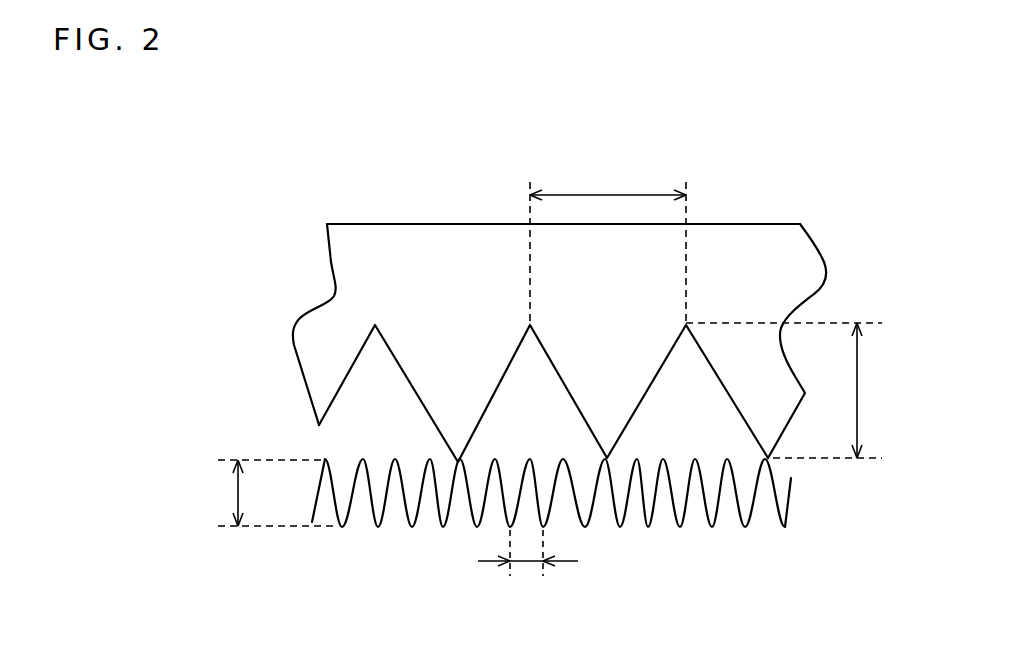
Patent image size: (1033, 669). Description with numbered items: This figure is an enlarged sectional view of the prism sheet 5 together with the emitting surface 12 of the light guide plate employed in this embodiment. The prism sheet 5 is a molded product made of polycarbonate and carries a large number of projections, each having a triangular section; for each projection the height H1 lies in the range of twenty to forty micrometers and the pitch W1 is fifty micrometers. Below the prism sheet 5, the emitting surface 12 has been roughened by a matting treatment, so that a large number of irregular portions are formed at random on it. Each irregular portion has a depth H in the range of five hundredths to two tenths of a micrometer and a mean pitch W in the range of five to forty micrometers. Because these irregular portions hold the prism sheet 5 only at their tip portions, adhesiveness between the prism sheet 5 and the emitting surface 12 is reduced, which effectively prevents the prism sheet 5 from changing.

The prism sheet 5 is at (386, 242).
The emitting surface 12 is at (710, 517).
The pitch W1 is at (608, 248).
The height H1 is at (788, 390).
The depth H is at (272, 493).
The mean pitch W is at (529, 553).